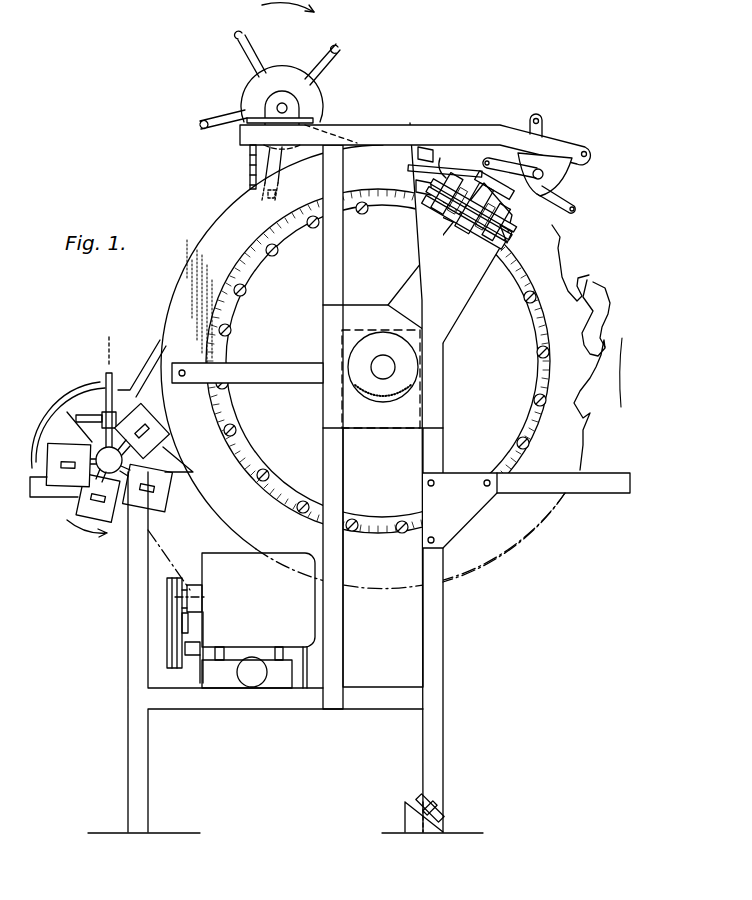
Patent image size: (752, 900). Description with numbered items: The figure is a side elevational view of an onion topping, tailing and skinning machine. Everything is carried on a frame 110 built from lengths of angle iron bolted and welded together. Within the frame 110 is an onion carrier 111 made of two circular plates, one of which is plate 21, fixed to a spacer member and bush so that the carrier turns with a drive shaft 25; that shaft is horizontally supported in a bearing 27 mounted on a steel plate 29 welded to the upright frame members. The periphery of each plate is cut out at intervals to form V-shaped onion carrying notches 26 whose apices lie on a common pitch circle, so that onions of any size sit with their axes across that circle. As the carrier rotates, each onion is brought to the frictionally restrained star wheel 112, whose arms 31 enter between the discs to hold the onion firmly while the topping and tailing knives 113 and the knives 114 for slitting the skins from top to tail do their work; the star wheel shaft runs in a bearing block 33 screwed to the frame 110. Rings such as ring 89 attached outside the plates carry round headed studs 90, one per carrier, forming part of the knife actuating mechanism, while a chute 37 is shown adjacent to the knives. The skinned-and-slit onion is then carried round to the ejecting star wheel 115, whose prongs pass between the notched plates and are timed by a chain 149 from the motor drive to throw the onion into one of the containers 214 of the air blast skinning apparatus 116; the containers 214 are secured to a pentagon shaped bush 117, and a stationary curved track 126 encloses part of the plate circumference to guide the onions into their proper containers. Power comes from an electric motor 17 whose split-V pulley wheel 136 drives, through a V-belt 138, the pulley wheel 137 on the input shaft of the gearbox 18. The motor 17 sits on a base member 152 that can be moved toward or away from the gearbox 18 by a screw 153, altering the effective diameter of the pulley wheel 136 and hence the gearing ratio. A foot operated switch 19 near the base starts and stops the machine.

The electric motor 17 is at (258, 600).
The gearbox 18 is at (203, 655).
The foot operated switch 19 is at (440, 798).
The circular plate 21 is at (589, 466).
The drive shaft 25 is at (389, 358).
The onion carrying notches 26 is at (578, 284).
The bearing 27 is at (402, 383).
The steel plate 29 is at (382, 426).
The arms of the star wheel 31 is at (543, 126).
The bearing block 33 is at (549, 177).
The chute 37 is at (494, 289).
The ring 89 is at (290, 240).
The round headed studs 90 is at (246, 296).
The frame 110 is at (454, 646).
The onion carrier 111 is at (546, 531).
The frictionally restrained star wheel 112 is at (583, 209).
The topping and tailing knives 113 is at (528, 216).
The knives for slitting the skins 114 is at (454, 180).
The ejecting star wheel 115 is at (307, 92).
The apparatus for air blast skinning 116 is at (63, 442).
The pentagon shaped bush 117 is at (76, 506).
The curved track 126 is at (236, 214).
The pulley wheel 136 is at (167, 592).
The pulley wheel 137 is at (167, 652).
The V-belt 138 is at (182, 630).
The chain 149 is at (252, 163).
The base member 152 is at (222, 690).
The screw 153 is at (253, 680).
The containers 214 is at (57, 470).